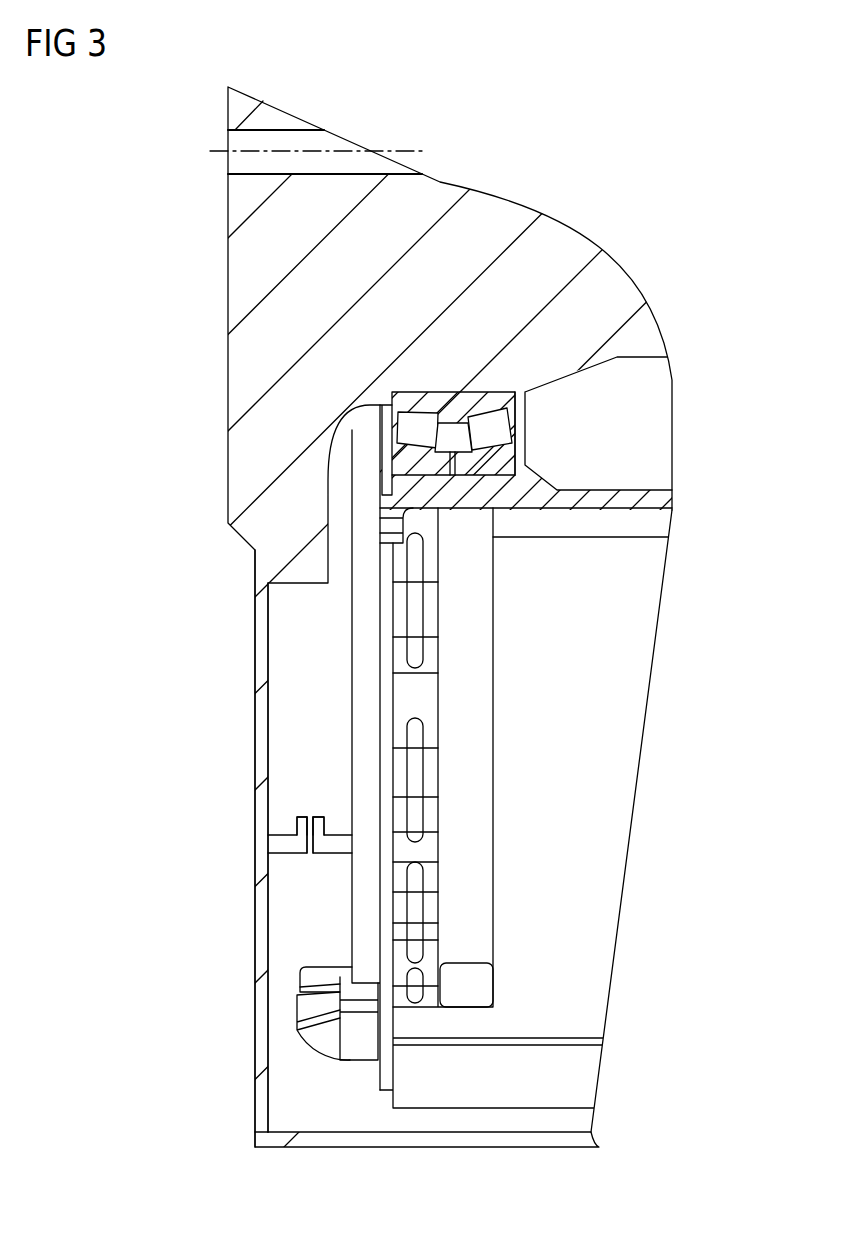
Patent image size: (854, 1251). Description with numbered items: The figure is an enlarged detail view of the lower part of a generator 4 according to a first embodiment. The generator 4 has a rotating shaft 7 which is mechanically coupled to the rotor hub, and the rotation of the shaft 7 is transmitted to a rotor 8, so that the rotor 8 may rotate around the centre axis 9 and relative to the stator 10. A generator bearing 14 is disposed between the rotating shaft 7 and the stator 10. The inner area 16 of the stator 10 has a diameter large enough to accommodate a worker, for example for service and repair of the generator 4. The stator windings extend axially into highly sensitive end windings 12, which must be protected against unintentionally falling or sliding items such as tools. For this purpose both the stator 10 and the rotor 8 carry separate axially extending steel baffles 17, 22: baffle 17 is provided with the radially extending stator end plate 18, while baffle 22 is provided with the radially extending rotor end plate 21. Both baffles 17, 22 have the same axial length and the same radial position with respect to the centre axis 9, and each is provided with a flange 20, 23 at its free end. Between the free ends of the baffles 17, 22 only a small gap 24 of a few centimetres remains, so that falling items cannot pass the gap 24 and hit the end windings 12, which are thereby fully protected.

The generator 4 is at (657, 211).
The rotating shaft 7 is at (240, 287).
The rotor 8 is at (235, 858).
The centre axis 9 is at (212, 151).
The stator 10 is at (566, 962).
The end windings 12 is at (312, 1071).
The generator bearing 14 is at (523, 425).
The inner area 16 is at (577, 854).
The baffle 17 is at (337, 845).
The stator end plate 18 is at (362, 622).
The flange 20 is at (322, 822).
The rotor end plate 21 is at (260, 728).
The baffle 22 is at (285, 845).
The flange 23 is at (303, 820).
The gap 24 is at (311, 807).